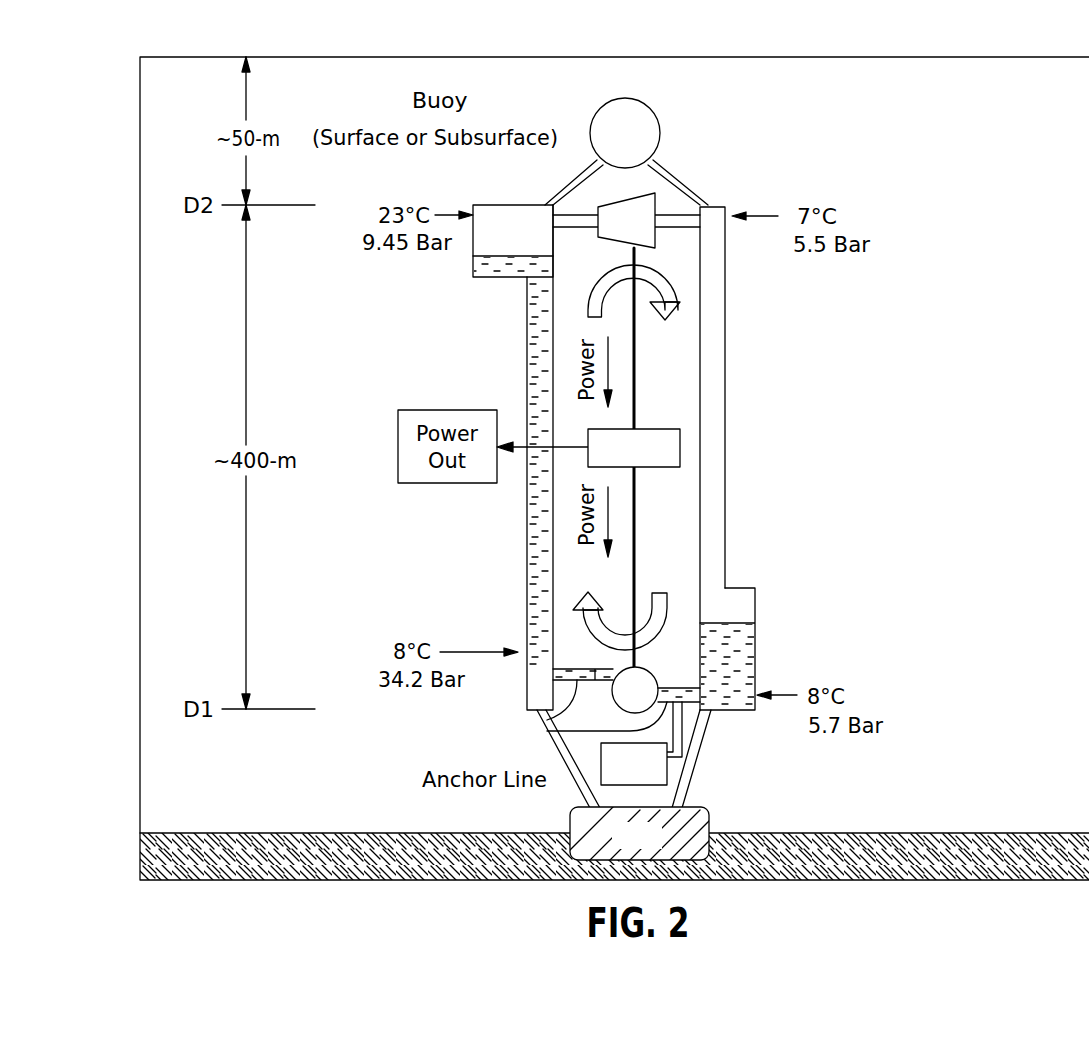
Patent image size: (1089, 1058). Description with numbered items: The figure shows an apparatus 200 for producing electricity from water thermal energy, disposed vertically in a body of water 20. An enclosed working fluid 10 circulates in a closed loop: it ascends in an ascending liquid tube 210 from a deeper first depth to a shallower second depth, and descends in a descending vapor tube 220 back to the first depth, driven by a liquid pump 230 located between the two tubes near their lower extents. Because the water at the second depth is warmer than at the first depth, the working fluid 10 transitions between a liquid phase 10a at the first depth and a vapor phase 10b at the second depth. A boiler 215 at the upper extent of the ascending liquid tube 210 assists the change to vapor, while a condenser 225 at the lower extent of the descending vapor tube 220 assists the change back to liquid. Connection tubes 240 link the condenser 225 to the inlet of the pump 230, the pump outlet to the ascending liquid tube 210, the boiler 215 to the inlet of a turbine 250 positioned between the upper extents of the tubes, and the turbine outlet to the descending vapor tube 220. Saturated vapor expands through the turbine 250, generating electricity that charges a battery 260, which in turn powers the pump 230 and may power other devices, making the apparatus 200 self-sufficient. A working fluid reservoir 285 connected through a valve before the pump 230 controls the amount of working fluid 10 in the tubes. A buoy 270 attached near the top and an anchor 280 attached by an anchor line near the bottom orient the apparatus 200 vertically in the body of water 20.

The apparatus 200 is at (722, 105).
The buoy 270 is at (606, 146).
The turbine 250 is at (608, 234).
The connection tube 240 is at (547, 731).
The enclosed working fluid 10 is at (421, 457).
The liquid phase 10a is at (540, 239).
The vapor phase 10b is at (530, 373).
The boiler 215 is at (490, 277).
The ascending liquid tube 210 is at (537, 537).
The descending vapor tube 220 is at (710, 408).
The battery 260 is at (680, 445).
The liquid pump 230 is at (652, 677).
The condenser 225 is at (755, 608).
The working fluid reservoir 285 is at (616, 777).
The anchor 280 is at (619, 845).
The body of water 20 is at (1011, 457).